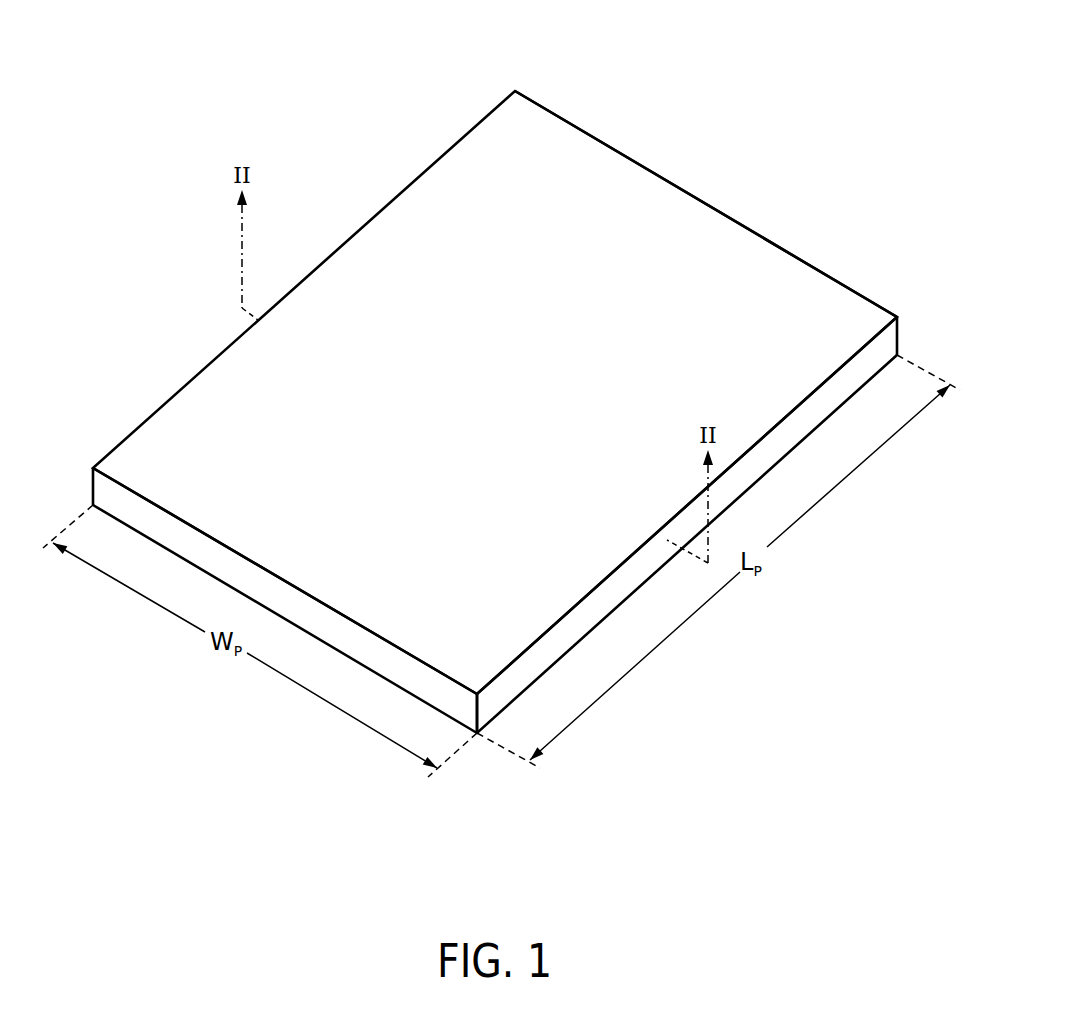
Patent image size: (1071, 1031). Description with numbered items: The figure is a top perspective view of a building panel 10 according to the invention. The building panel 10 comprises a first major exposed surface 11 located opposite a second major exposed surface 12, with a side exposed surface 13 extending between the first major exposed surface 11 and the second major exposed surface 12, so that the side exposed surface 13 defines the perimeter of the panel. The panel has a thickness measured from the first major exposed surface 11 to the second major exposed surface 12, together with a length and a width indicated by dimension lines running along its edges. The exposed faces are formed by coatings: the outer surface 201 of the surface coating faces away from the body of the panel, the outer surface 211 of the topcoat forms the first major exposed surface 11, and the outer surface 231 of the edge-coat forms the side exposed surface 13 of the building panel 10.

The building panel 10 is at (818, 80).
The first major exposed surface 11 is at (444, 225).
The second major exposed surface 12 is at (596, 628).
The side exposed surface 13 is at (790, 435).
The outer surface of the surface coating 201 is at (645, 193).
The outer surface of the topcoat 211 is at (713, 240).
The outer surface of the edge-coat 231 is at (830, 395).